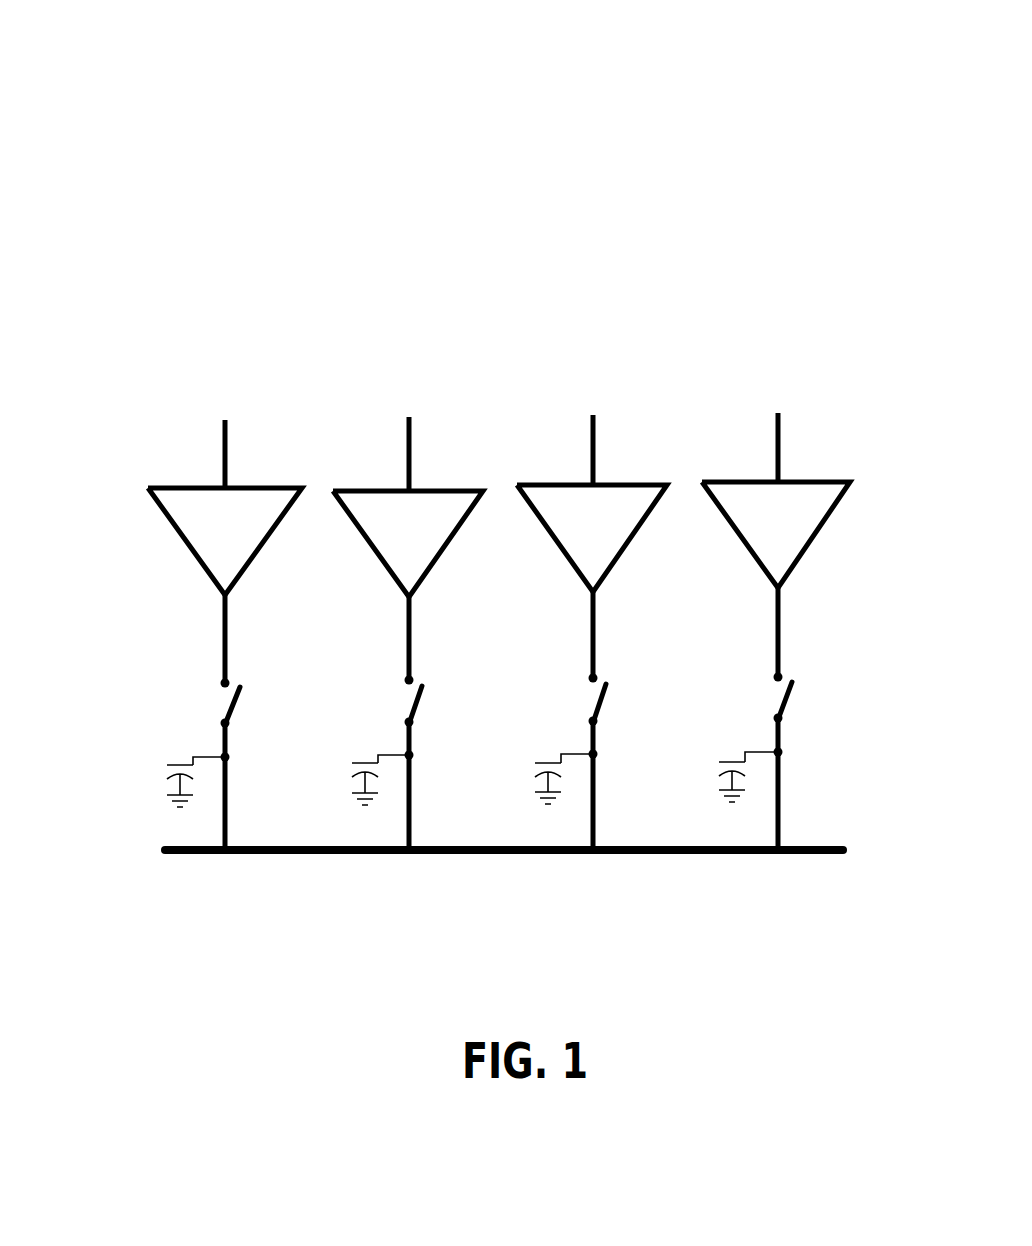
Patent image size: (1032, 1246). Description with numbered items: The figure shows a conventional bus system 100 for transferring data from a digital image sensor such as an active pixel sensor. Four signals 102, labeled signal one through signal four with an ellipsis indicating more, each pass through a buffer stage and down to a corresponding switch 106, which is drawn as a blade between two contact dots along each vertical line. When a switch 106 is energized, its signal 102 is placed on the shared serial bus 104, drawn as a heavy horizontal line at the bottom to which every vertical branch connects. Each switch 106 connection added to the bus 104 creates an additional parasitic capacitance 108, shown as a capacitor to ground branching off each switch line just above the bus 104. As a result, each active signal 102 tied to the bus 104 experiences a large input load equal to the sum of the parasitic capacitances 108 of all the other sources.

The bus system 100 is at (779, 66).
The signals 102 is at (213, 308).
The serial bus 104 is at (157, 866).
The switches 106 is at (238, 678).
The parasitic capacitance 108 is at (162, 762).